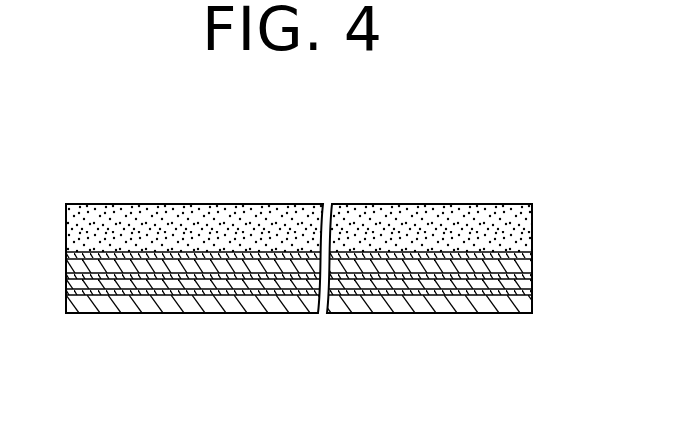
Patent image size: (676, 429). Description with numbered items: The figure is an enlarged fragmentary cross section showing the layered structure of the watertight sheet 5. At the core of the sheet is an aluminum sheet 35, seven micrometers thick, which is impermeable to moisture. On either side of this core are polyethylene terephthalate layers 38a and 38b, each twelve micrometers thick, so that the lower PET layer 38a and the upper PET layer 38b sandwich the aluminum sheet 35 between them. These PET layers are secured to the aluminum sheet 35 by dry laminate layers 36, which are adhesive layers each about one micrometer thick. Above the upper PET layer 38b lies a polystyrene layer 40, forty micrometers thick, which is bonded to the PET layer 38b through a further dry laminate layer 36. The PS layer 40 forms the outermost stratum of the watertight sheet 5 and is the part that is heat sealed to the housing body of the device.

The watertight sheet 5 is at (158, 204).
The polystyrene (PS) layer 40 is at (413, 204).
The upper polyethylene terephthalate (PET) layer 38b is at (532, 260).
The aluminum sheet 35 is at (532, 277).
The dry laminate layers (adhesive layers) 36 is at (66, 256).
The lower polyethylene terephthalate (PET) layer 38a is at (440, 313).